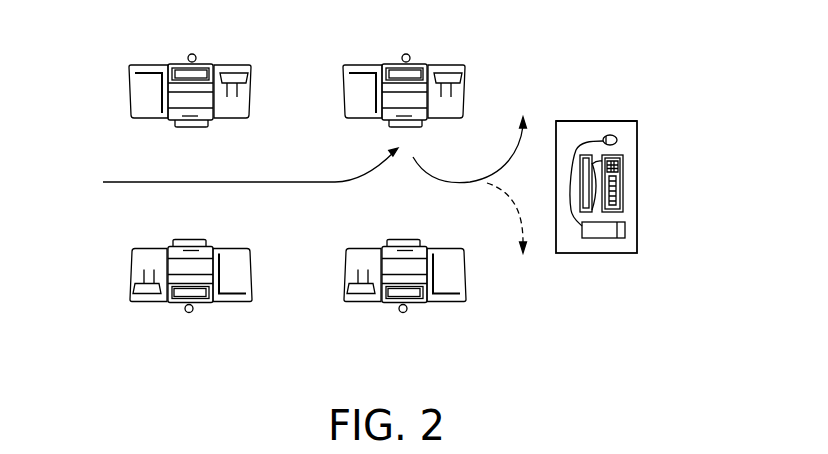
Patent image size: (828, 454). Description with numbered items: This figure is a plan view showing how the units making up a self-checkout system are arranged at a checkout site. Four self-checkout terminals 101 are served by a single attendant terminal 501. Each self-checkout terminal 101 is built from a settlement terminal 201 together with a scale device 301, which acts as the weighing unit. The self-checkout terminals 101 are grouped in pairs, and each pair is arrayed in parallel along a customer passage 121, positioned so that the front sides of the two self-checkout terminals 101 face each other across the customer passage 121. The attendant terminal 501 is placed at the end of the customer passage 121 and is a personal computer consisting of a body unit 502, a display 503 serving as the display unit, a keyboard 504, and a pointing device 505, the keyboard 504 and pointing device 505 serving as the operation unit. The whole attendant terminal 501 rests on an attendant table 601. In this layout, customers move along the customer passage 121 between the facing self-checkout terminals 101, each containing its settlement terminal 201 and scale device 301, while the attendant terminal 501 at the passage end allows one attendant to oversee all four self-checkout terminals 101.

The self-checkout terminal 101 is at (164, 42).
The customer passage 121 is at (133, 183).
The settlement terminal 201 is at (213, 121).
The scale device 301 is at (240, 63).
The attendant terminal 501 is at (574, 265).
The body unit 502 is at (607, 238).
The display 503 is at (623, 168).
The keyboard 504 is at (623, 200).
The pointing device 505 is at (613, 134).
The attendant table 601 is at (575, 120).